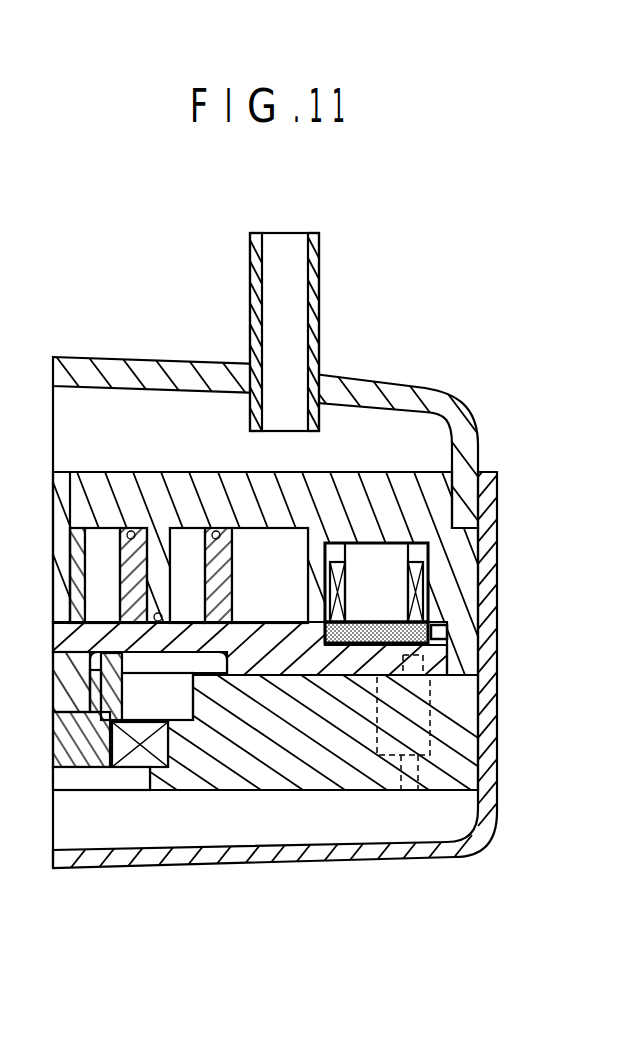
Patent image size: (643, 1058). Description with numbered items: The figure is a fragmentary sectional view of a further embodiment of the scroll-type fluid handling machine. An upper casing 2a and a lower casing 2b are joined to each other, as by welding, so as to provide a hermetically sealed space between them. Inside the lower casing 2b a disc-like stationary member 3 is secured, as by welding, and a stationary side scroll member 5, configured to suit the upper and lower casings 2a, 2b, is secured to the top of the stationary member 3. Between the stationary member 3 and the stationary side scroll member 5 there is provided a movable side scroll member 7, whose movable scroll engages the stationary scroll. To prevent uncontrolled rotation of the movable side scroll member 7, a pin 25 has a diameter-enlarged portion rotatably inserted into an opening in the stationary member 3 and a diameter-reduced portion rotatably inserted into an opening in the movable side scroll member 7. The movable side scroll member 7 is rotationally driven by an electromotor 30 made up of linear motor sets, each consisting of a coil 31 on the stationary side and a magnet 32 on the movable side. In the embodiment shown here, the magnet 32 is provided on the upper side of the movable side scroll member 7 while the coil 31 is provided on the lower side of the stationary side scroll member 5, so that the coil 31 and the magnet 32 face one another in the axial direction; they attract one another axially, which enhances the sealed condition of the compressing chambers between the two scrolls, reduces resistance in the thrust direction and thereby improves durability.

The upper casing 2a is at (400, 385).
The lower casing 2b is at (423, 852).
The stationary member 3 is at (465, 775).
The stationary side scroll member 5 is at (413, 488).
The movable side scroll member 7 is at (271, 660).
The pin 25 is at (465, 718).
The electromotor 30 is at (452, 610).
The coil 31 is at (430, 572).
The magnet 32 is at (444, 634).